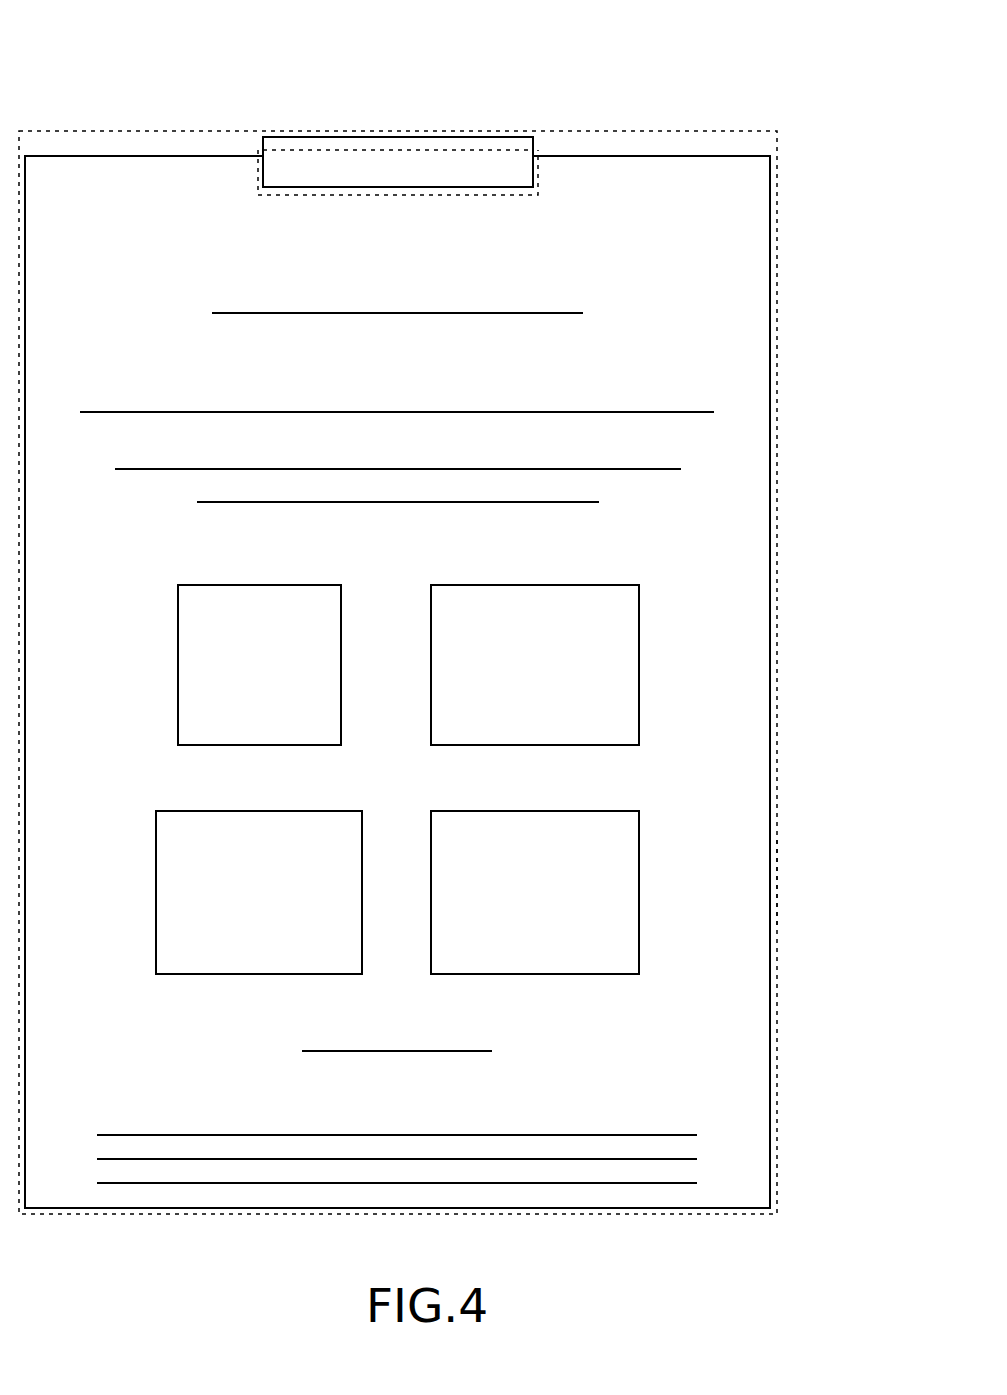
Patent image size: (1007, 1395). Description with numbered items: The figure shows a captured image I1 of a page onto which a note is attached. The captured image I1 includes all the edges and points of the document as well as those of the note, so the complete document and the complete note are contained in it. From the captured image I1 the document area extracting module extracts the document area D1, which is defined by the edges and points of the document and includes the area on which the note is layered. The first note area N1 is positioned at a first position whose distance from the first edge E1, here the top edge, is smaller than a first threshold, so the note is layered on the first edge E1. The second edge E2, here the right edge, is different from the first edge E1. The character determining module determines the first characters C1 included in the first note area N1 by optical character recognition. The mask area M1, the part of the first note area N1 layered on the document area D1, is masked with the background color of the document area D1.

The captured image I1 is at (150, 128).
The first note area N1 is at (329, 137).
The first edge E1 is at (649, 157).
The mask area M1 is at (253, 175).
The first characters C1 is at (400, 185).
The second edge E2 is at (775, 883).
The document area D1 is at (715, 1070).